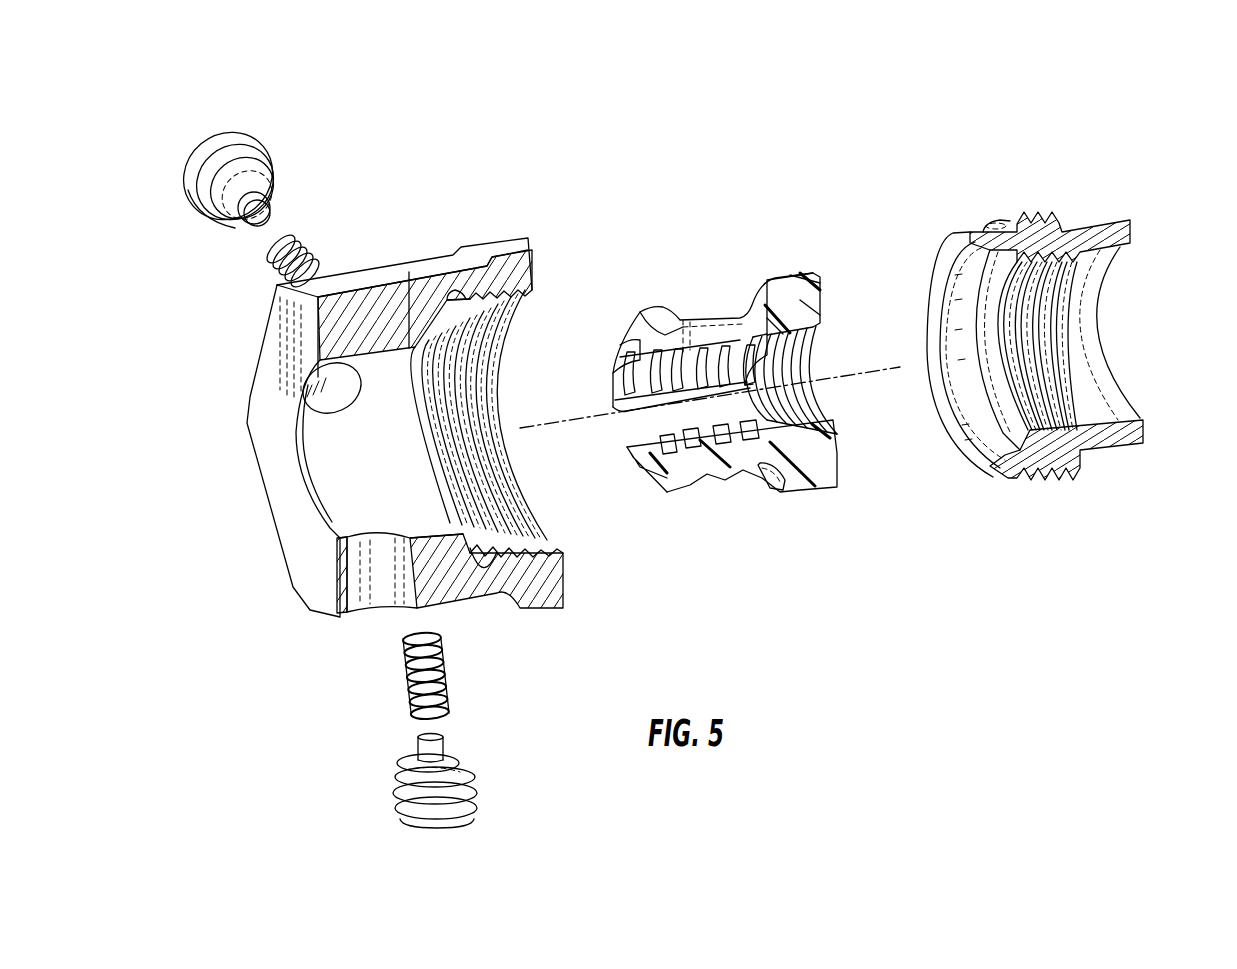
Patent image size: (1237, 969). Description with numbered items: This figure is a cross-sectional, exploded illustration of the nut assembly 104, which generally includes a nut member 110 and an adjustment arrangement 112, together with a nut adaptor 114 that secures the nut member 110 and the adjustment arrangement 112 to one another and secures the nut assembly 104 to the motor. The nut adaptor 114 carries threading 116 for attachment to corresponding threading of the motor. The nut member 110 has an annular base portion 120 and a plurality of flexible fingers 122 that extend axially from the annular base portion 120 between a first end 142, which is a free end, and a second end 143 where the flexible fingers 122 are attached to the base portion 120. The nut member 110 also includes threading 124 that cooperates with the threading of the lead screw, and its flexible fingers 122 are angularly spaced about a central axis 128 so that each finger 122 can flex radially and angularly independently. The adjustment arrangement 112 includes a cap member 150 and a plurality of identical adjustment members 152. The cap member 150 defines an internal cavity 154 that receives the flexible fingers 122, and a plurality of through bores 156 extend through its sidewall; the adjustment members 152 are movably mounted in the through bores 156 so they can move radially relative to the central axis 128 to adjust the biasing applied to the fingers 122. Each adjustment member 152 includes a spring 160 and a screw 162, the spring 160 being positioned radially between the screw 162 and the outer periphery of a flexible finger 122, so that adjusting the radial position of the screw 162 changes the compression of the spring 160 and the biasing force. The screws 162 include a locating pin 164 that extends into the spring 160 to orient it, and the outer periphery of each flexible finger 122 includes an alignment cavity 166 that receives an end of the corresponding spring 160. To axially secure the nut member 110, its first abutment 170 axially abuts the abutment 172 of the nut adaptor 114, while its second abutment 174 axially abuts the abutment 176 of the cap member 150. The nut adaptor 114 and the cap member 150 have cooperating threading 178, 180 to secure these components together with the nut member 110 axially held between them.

The nut assembly 104 is at (1137, 60).
The adjustment arrangement 112 is at (175, 117).
The adjustment member 152 is at (273, 117).
The screw 162 is at (205, 198).
The locating pin 164 is at (262, 224).
The spring 160 is at (272, 268).
The cap member 150 is at (285, 487).
The internal cavity 154 is at (397, 373).
The through bore 156 is at (343, 400).
The abutment 176 is at (522, 562).
The threading 180 is at (523, 523).
The central axis 128 is at (580, 408).
The nut member 110 is at (780, 540).
The flexible finger 122 is at (662, 320).
The threading 124 is at (720, 318).
The annular base portion 120 is at (793, 280).
The first end 142 is at (617, 370).
The second end 143 is at (755, 485).
The alignment cavity 166 is at (698, 492).
The first abutment 170 is at (838, 470).
The second abutment 174 is at (780, 490).
The nut adaptor 114 is at (1112, 445).
The threading 116 is at (1050, 355).
The abutment 172 is at (1030, 445).
The threading 178 is at (1025, 208).